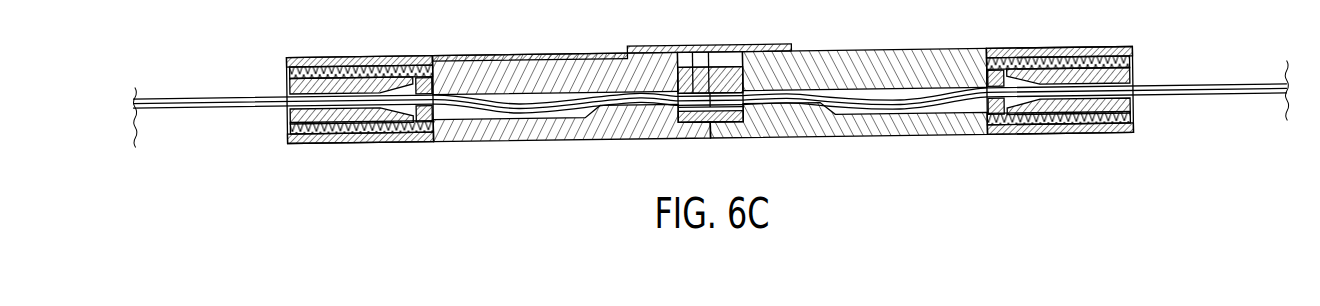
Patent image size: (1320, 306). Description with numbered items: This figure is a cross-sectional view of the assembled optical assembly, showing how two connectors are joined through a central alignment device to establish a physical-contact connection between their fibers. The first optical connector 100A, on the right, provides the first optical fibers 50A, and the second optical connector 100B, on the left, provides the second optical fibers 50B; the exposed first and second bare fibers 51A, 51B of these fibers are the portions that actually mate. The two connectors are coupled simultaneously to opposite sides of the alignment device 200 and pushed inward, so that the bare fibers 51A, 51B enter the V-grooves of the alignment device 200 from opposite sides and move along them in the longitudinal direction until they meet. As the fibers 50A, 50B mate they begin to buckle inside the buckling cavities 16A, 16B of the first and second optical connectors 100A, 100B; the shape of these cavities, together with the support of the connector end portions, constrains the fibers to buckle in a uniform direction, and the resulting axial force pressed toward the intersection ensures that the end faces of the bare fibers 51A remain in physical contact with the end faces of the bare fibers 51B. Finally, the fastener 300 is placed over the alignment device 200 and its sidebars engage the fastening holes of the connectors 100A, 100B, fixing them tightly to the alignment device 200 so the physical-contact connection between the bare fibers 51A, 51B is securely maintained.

The second optical connector 100B is at (477, 52).
The first optical connector 100A is at (952, 58).
The buckling cavity 16B is at (583, 117).
The buckling cavity 16A is at (823, 111).
The alignment device 200 is at (697, 65).
The fastener 300 is at (650, 45).
The second optical fibers 50B is at (178, 91).
The first optical fibers 50A is at (1222, 90).
The second bare fibers 51B is at (695, 92).
The first bare fibers 51A is at (733, 123).